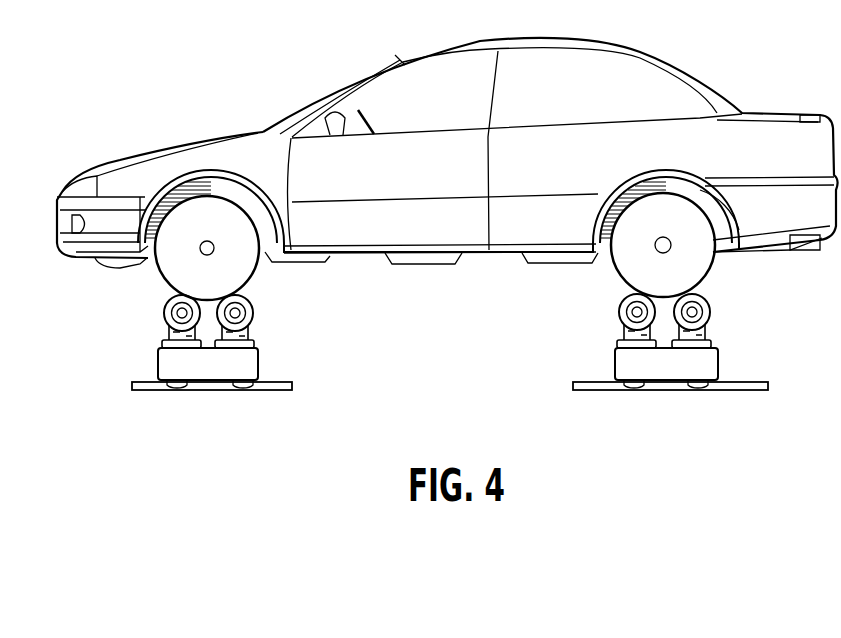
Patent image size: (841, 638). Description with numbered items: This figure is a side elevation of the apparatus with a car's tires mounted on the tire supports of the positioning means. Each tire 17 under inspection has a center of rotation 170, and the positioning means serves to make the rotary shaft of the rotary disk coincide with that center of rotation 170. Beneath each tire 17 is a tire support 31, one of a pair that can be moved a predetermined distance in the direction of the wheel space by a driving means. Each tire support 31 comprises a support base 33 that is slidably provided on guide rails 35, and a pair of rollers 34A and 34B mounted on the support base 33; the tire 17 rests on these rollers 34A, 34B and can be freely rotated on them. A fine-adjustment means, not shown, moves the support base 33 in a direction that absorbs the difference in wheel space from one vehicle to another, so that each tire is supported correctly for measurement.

The tire 17 is at (459, 199).
The center of rotation 170 is at (207, 241).
The tire support 31 is at (416, 378).
The support base 33 is at (248, 368).
The roller 34A is at (164, 319).
The roller 34B is at (256, 303).
The guide rail 35 is at (148, 391).